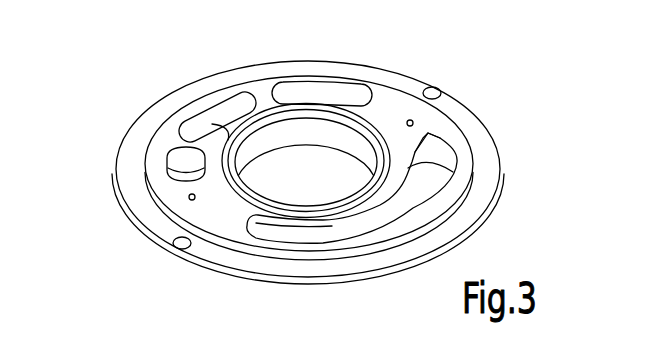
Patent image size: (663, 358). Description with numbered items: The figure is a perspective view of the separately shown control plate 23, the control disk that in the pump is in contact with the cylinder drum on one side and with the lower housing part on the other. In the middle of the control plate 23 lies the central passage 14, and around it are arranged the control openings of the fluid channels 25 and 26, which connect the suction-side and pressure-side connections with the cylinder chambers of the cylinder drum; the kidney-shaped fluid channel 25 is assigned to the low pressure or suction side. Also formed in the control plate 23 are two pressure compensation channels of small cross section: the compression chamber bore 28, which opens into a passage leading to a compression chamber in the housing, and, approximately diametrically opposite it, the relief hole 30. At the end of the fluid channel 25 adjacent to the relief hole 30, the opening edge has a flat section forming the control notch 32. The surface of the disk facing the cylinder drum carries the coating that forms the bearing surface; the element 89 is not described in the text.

The central passage 14 is at (293, 165).
The control plate 23 is at (457, 143).
The fluid channel 25 is at (423, 165).
The fluid channel 26 is at (333, 83).
The compression chamber bore 28 is at (188, 198).
The relief hole 30 is at (407, 122).
The control notch 32 is at (436, 134).
The plate 89 is at (490, 180).